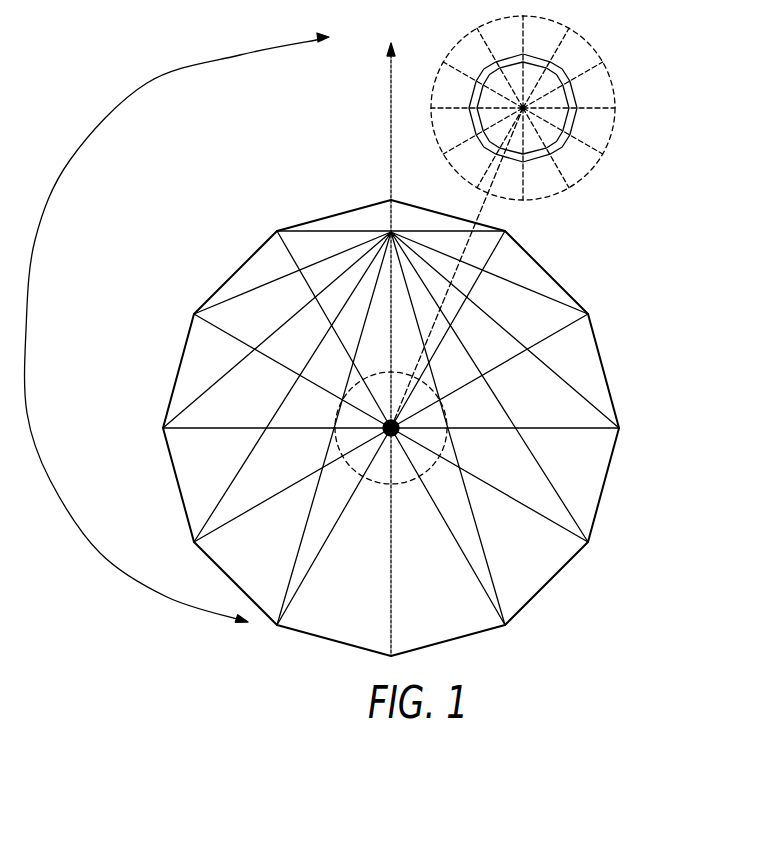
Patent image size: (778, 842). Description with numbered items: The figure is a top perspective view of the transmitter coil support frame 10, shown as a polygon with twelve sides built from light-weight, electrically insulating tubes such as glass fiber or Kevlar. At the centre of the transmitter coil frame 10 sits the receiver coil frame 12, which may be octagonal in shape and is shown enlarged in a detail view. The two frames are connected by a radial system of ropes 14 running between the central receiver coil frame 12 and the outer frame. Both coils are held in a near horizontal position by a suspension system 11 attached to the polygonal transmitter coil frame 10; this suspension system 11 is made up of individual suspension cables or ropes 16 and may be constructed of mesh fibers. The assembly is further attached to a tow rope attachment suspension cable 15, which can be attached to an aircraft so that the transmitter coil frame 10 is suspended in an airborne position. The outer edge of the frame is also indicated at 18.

The transmitter coil support frame 10 is at (373, 428).
The suspension system 11 is at (173, 327).
The receiver coil frame 12 is at (648, 108).
The radial system of ropes 14 is at (284, 243).
The tow rope attachment suspension cable 15 is at (389, 131).
The suspension cable or rope 16 is at (528, 287).
The outer edge 18 is at (603, 486).